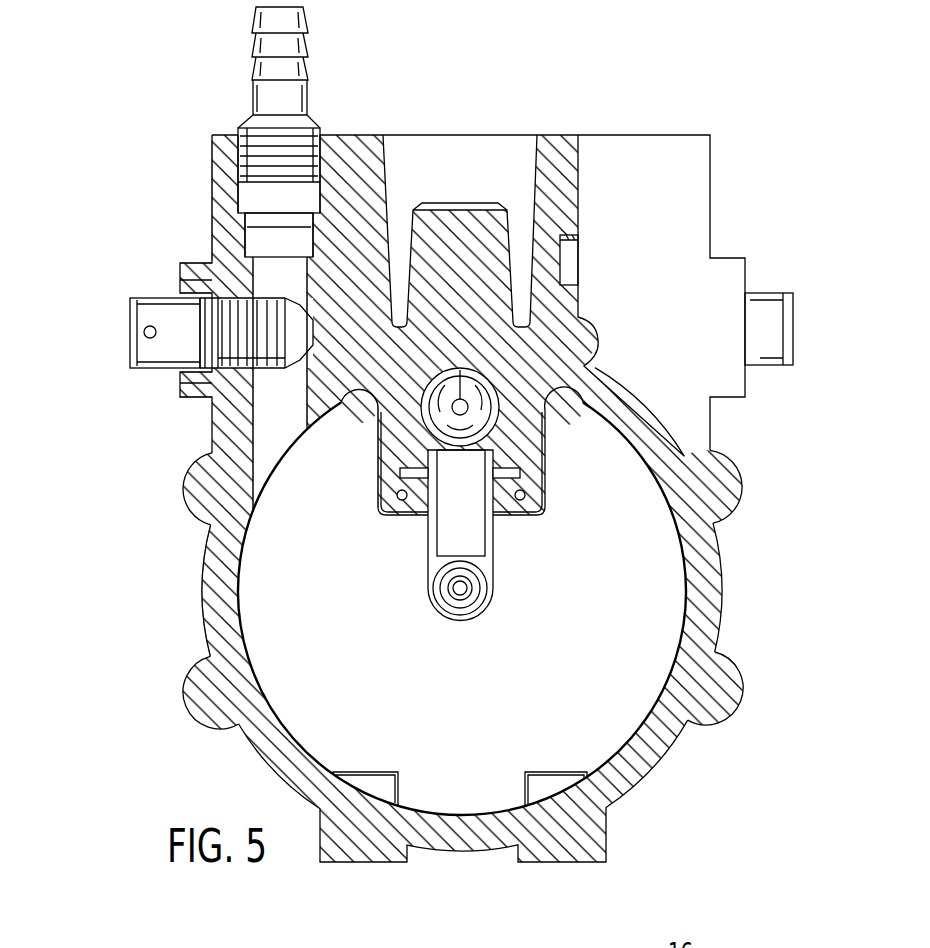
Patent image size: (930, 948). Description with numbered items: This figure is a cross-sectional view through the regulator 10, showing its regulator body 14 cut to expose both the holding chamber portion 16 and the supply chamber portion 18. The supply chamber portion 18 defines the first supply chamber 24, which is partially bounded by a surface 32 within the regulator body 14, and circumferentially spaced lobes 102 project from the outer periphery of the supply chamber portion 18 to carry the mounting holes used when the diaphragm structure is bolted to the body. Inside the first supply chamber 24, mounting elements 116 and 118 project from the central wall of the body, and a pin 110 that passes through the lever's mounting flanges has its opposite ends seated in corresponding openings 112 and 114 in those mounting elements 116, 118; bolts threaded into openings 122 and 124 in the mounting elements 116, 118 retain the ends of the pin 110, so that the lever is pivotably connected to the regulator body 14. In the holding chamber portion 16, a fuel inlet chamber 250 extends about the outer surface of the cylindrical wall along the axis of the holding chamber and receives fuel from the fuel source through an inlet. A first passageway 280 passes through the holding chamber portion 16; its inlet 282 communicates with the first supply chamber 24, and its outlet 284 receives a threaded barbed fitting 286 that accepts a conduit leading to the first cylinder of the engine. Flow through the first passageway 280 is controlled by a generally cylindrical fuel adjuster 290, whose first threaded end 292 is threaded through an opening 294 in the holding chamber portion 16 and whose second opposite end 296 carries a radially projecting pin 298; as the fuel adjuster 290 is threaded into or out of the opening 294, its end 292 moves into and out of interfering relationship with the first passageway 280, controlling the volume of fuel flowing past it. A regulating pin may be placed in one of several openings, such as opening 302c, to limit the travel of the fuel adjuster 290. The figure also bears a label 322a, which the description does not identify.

The regulator 10 is at (806, 766).
The regulator body 14 is at (732, 557).
The holding chamber portion 16 is at (265, 133).
The supply chamber portion 18 is at (196, 629).
The first supply chamber 24 is at (460, 696).
The surface 32 is at (612, 750).
The lobes 102 is at (196, 505).
The pin 110 is at (342, 448).
The opening 112 is at (400, 473).
The opening 114 is at (522, 475).
The mounting element 116 is at (379, 514).
The mounting element 118 is at (543, 433).
The opening 122 is at (402, 502).
The opening 124 is at (522, 502).
The fuel inlet chamber 250 is at (477, 184).
The first passageway 280 is at (252, 462).
The inlet 282 is at (268, 465).
The outlet 284 is at (238, 156).
The barbed fitting 286 is at (314, 38).
The fuel adjuster 290 is at (138, 386).
The first threaded end 292 is at (228, 247).
The opening 294 is at (228, 309).
The second opposite end 296 is at (130, 335).
The pin 298 is at (162, 365).
The opening 302c is at (180, 390).
The upper boss 322a is at (185, 281).